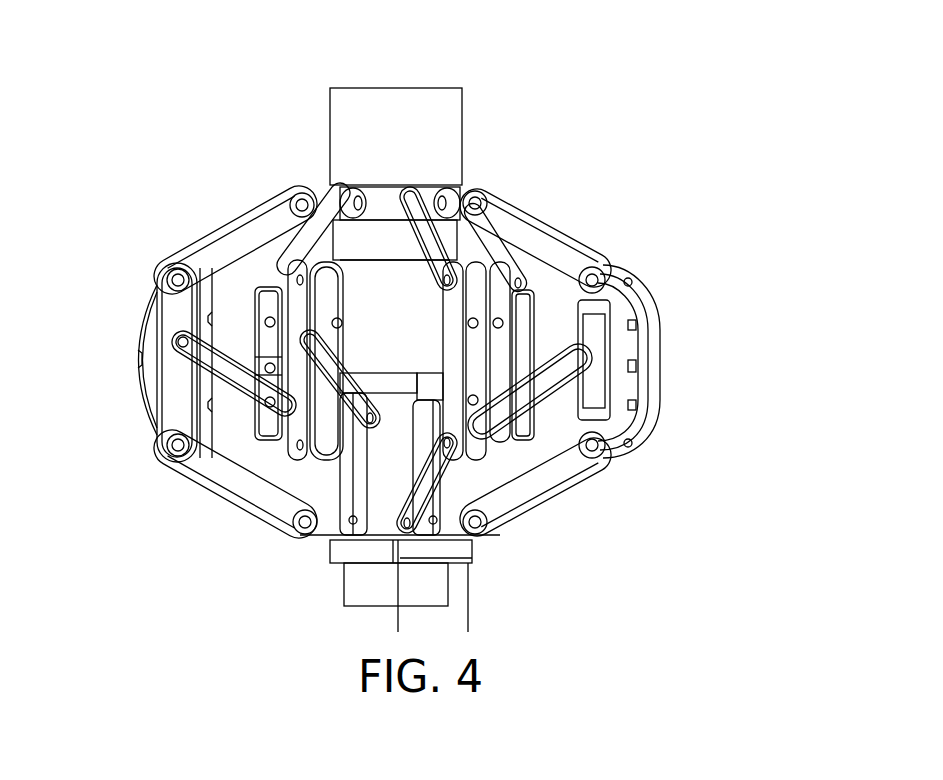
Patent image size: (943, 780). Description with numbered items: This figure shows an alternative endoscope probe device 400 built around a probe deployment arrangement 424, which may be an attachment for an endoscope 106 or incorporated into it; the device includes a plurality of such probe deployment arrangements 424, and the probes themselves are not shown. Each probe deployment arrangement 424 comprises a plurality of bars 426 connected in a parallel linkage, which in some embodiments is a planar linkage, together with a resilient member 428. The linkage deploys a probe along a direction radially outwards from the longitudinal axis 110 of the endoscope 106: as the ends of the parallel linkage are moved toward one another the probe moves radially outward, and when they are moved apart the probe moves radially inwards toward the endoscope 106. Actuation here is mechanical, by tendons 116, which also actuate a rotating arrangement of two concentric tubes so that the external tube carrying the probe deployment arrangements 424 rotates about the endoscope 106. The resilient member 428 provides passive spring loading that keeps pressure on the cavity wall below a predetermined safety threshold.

The endoscope probe device 400 is at (580, 90).
The longitudinal axis 110 is at (398, 186).
The endoscope 106 is at (367, 583).
The tendons 116 is at (402, 593).
The probe deployment arrangement 424 is at (218, 253).
The bars 426 is at (608, 252).
The resilient member 428 is at (139, 410).